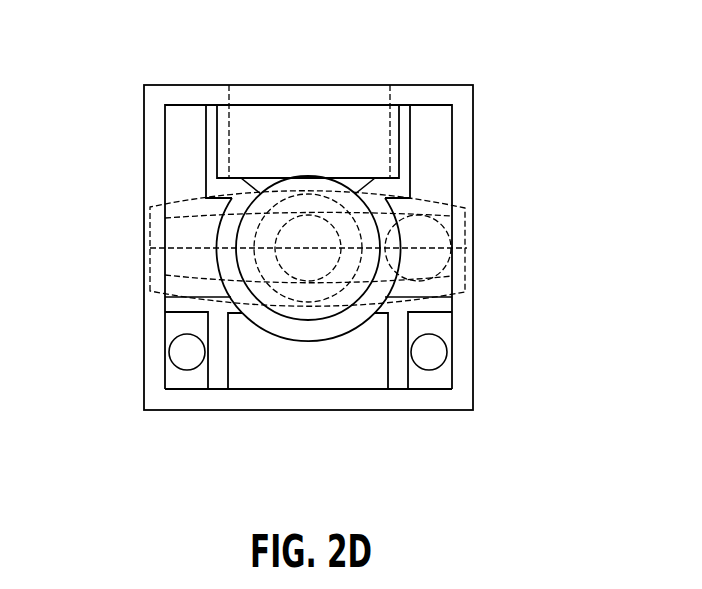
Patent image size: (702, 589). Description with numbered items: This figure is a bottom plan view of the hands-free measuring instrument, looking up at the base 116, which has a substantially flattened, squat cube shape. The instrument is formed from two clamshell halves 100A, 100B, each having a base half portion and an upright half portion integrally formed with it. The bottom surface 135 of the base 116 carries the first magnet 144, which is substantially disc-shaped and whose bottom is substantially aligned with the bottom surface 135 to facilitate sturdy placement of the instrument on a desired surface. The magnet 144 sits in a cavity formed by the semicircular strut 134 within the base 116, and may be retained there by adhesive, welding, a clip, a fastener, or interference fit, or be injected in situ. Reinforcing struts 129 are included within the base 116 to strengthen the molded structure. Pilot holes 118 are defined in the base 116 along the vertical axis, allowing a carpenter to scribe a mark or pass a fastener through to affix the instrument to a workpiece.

The clamshell half 100A is at (232, 58).
The clamshell half 100B is at (262, 452).
The base 116 is at (140, 125).
The pilot hole 118 is at (187, 353).
The reinforcing strut 129 is at (218, 370).
The semicircular strut 134 is at (295, 328).
The bottom surface 135 is at (418, 140).
The first magnet 144 is at (330, 205).